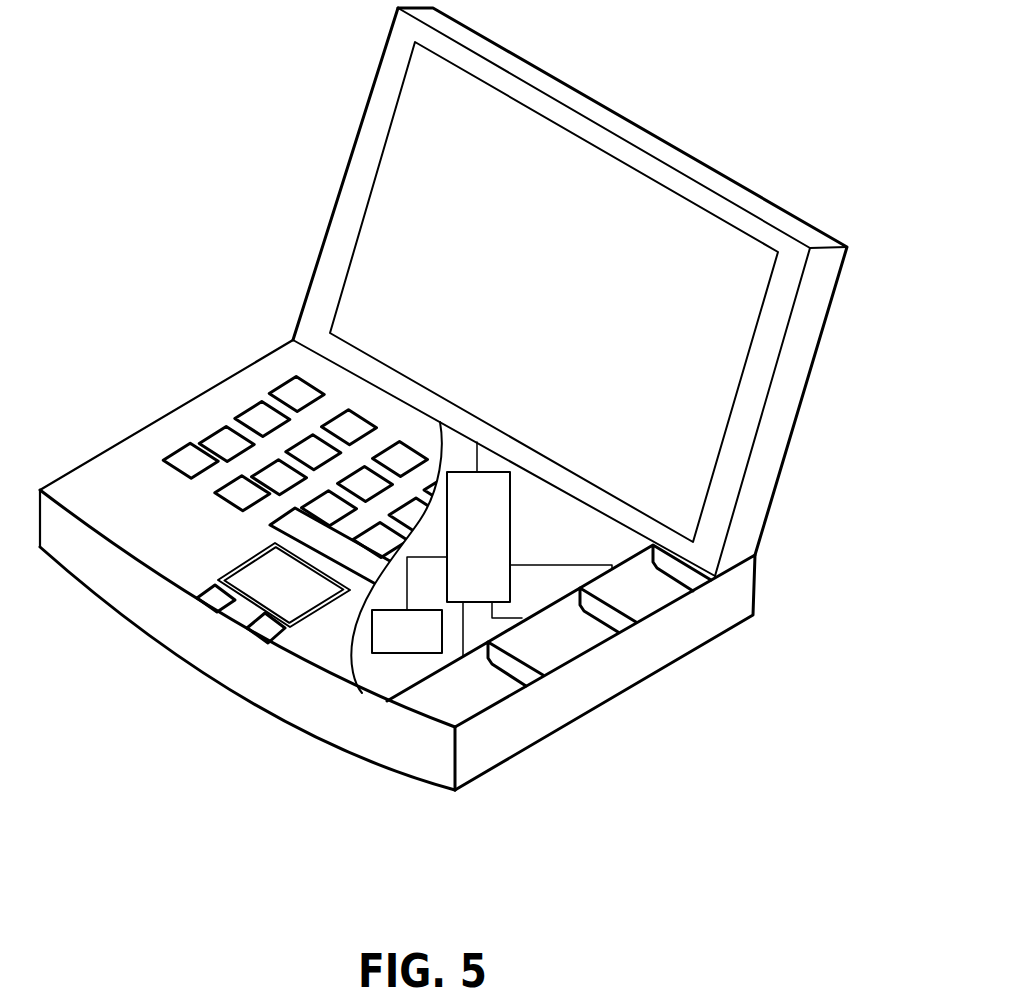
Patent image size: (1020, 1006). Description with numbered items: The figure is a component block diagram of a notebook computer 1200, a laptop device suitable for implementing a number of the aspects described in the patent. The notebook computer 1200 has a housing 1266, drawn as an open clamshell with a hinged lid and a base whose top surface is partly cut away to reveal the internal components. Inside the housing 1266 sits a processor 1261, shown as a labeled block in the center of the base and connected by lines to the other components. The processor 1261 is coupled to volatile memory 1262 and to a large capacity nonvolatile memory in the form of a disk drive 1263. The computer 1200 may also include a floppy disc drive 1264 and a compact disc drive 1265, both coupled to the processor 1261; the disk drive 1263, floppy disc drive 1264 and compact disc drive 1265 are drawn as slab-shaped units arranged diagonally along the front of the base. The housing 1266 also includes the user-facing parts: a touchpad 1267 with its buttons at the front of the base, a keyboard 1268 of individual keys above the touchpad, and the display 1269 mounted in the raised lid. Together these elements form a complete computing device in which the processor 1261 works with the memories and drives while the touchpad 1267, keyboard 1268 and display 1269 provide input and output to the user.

The notebook computer 1200 is at (632, 86).
The processor 1261 is at (455, 544).
The volatile memory 1262 is at (383, 642).
The disk drive 1263 is at (438, 704).
The floppy disc drive 1264 is at (532, 649).
The compact disc (CD) drive 1265 is at (622, 594).
The housing 1266 is at (780, 473).
The touchpad 1267 is at (257, 607).
The keyboard 1268 is at (258, 400).
The display 1269 is at (700, 510).